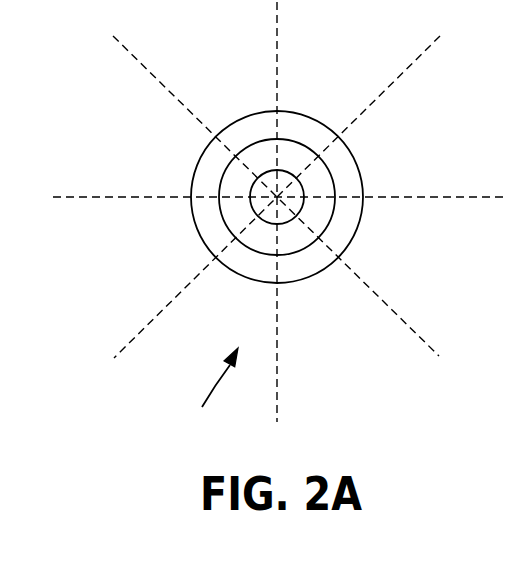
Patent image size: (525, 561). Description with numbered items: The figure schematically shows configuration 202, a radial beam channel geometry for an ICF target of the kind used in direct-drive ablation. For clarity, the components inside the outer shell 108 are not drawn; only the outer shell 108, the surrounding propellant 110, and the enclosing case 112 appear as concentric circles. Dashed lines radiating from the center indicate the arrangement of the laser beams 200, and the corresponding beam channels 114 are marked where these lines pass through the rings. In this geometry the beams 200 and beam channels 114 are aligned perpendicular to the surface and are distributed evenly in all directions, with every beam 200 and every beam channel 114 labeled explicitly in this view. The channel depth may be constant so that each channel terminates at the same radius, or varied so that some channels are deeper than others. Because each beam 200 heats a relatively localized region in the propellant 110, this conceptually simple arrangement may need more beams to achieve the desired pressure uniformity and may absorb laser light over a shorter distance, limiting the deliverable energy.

The outer shell 108 is at (287, 198).
The propellant 110 is at (263, 163).
The case 112 is at (315, 135).
The beam channels 114 is at (283, 111).
The laser beams 200 is at (125, 54).
The configuration 202 is at (199, 399).